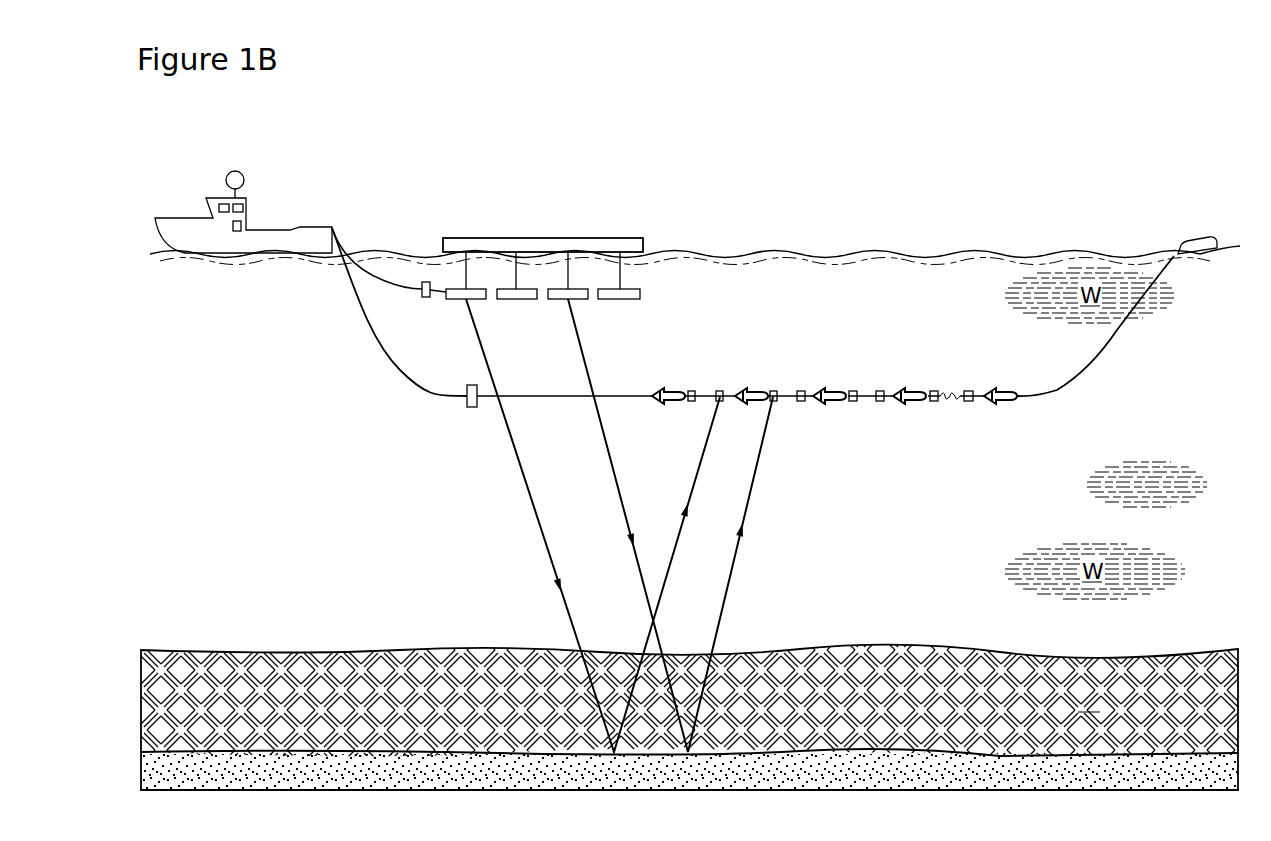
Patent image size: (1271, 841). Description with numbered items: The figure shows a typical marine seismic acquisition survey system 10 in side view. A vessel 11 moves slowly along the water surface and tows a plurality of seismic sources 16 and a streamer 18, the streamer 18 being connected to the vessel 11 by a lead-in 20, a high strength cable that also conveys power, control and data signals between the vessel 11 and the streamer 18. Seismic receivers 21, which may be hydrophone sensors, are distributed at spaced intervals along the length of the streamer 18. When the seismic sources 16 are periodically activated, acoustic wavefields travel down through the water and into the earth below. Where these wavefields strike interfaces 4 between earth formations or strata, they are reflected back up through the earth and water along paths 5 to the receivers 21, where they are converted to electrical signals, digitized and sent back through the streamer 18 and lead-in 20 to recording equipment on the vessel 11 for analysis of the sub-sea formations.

The marine seismic acquisition survey system 10 is at (706, 200).
The vessel 11 is at (168, 216).
The seismic sources 16 is at (580, 300).
The lead-ins 20 is at (383, 352).
The streamers 18 is at (707, 394).
The seismic receivers 21 is at (692, 390).
The paths 5 is at (736, 570).
The interfaces 4 is at (974, 705).